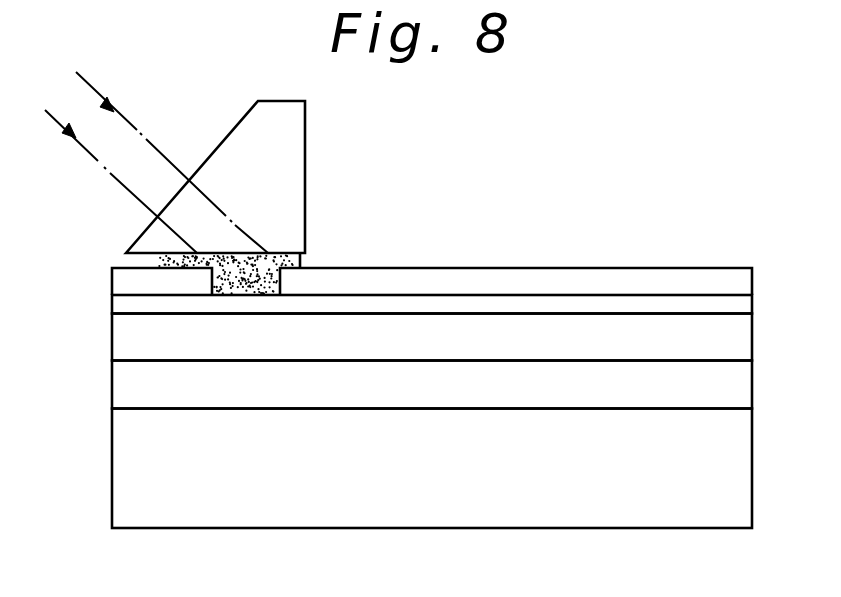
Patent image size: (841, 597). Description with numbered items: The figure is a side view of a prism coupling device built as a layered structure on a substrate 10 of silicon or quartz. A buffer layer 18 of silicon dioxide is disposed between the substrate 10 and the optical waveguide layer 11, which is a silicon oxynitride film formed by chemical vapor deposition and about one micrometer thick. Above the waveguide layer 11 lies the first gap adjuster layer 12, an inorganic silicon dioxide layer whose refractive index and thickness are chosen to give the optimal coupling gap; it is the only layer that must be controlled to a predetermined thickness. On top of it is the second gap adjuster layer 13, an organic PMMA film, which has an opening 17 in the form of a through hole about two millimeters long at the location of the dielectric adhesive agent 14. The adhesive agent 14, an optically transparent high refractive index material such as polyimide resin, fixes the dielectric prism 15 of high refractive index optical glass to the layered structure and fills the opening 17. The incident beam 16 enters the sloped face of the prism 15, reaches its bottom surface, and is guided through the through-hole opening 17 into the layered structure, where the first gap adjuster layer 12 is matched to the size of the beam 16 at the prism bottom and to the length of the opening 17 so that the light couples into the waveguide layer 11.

The substrate 10 is at (133, 478).
The buffer layer 18 is at (130, 392).
The optical waveguide layer 11 is at (128, 342).
The first gap adjuster layer 12 is at (118, 303).
The second gap adjuster layer 13 is at (118, 278).
The dielectric adhesive agent 14 is at (255, 267).
The dielectric prism 15 is at (285, 163).
The incident beam 16 is at (95, 99).
The opening 17 is at (213, 280).